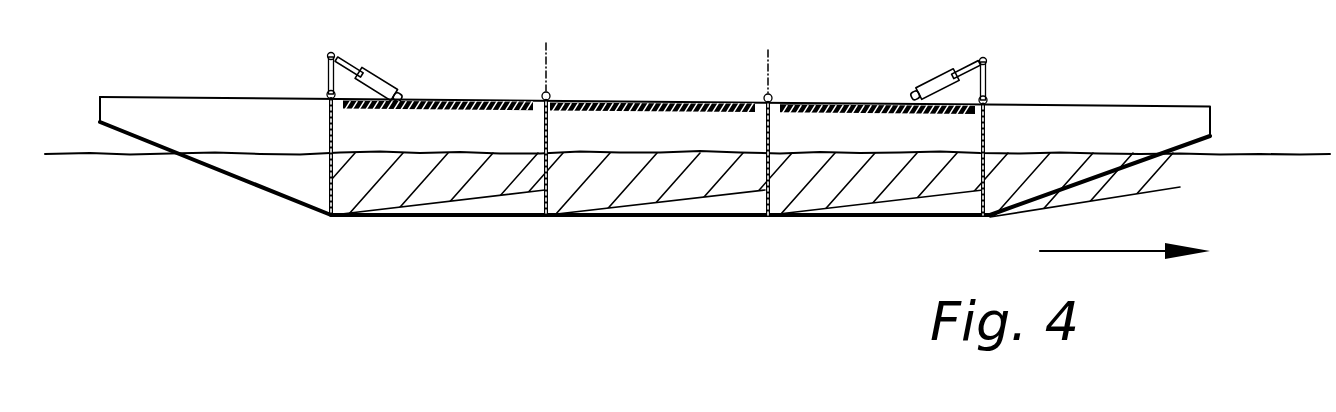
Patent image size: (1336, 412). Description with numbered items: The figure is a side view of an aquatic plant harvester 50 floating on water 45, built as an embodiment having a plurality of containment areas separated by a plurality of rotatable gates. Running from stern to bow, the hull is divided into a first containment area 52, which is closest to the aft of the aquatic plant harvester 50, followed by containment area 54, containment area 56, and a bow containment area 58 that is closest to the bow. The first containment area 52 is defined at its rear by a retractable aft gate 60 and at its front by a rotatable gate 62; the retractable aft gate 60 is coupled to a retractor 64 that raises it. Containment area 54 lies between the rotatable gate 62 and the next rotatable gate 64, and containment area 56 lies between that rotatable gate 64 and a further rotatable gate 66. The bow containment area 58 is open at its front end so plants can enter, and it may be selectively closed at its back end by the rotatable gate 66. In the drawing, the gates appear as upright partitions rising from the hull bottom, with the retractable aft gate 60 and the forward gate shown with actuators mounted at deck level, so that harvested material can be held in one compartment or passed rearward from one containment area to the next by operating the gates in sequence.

The water 45 is at (92, 148).
The aquatic plant harvester 50 is at (213, 74).
The first containment area 52 is at (438, 205).
The containment area 54 is at (663, 202).
The containment area 56 is at (887, 202).
The bow containment area 58 is at (1097, 205).
The retractable aft gate 60 is at (330, 120).
The rotatable gate 62 is at (550, 68).
The rotatable gate 64 is at (386, 80).
The rotatable gate 66 is at (988, 80).